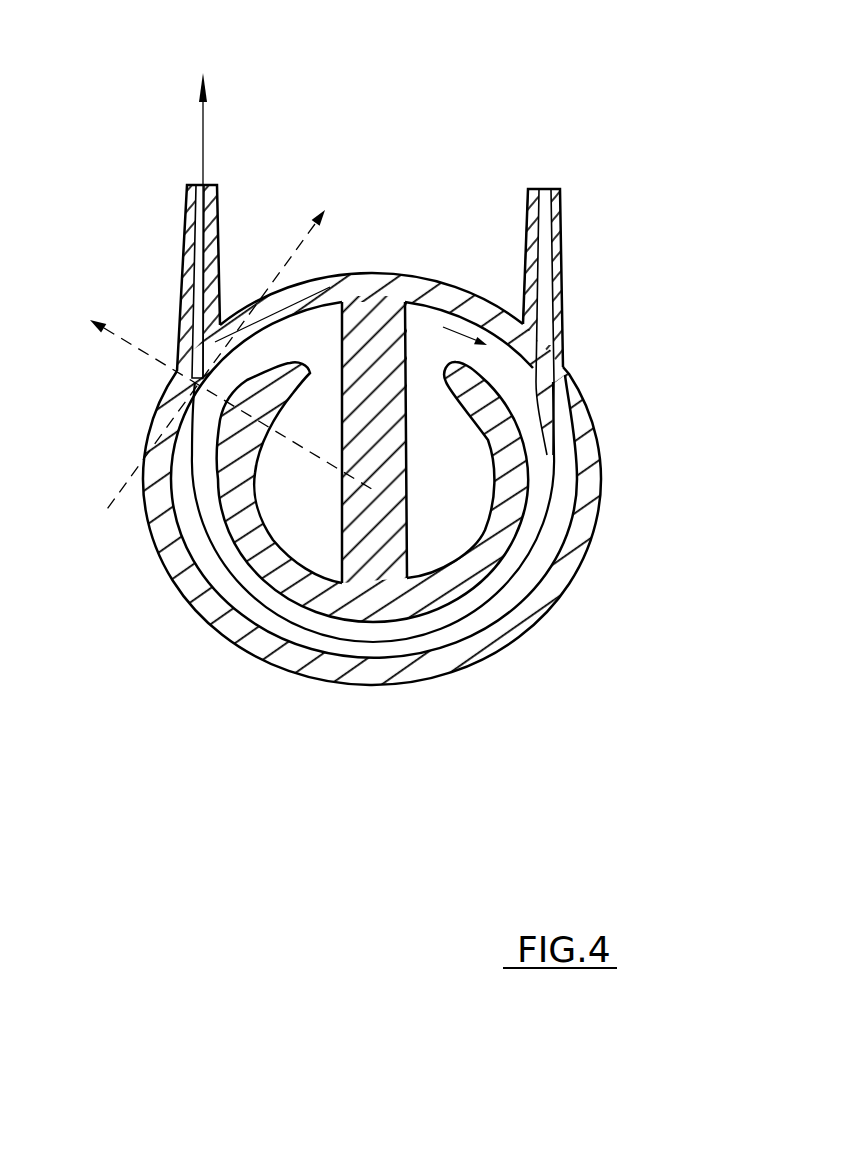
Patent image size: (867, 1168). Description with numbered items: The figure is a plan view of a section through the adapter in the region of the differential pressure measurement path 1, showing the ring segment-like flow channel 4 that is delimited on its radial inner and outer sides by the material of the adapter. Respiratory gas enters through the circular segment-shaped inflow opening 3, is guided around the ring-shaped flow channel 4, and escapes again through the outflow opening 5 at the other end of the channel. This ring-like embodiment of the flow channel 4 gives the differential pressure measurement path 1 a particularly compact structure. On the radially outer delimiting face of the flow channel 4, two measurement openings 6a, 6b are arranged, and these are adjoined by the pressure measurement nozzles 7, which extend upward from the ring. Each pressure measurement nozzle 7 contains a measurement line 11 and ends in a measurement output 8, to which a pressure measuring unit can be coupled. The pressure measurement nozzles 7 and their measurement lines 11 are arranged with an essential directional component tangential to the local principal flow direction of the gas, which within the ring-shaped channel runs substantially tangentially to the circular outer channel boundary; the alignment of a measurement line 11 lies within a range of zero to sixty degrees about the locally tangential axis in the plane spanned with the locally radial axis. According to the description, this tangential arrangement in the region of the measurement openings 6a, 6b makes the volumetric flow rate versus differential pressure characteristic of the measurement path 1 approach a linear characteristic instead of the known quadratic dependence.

The differential pressure measurement path 1 is at (397, 405).
The inflow opening 3 is at (425, 378).
The flow channel 4 is at (380, 657).
The outflow opening 5 is at (325, 378).
The measurement opening 6a is at (542, 383).
The measurement opening 6b is at (190, 380).
The pressure measurement nozzles 7 is at (436, 242).
The measurement output 8 is at (547, 187).
The measurement line 11 is at (542, 320).